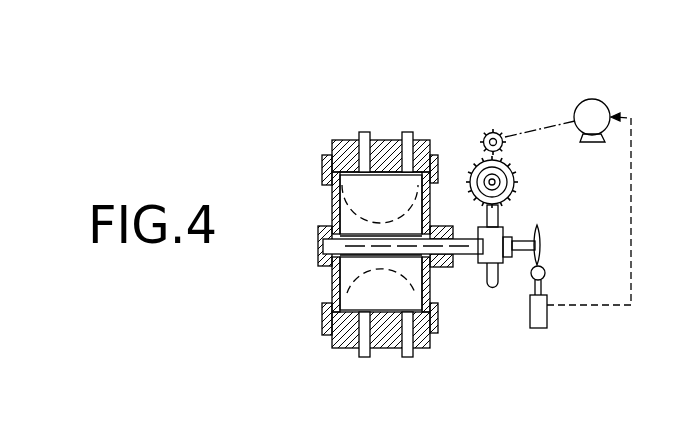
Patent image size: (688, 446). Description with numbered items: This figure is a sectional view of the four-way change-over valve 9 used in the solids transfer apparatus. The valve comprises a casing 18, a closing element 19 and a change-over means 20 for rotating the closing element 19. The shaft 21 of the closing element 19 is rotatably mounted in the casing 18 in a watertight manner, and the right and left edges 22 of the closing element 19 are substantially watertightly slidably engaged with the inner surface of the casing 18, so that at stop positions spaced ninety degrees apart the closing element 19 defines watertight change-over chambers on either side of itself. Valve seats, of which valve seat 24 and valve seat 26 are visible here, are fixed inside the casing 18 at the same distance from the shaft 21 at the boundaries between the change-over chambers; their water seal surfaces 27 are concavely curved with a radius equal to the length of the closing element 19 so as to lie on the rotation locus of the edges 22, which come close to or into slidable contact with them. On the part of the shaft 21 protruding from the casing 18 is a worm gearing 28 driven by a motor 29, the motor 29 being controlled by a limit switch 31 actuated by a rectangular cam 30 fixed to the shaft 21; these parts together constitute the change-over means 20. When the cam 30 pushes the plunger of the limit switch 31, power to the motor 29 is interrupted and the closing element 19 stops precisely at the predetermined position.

The four-way change-over valve 9 is at (380, 140).
The casing 18 is at (329, 203).
The closing element 19 is at (347, 274).
The change-over means 20 is at (493, 113).
The shaft 21 is at (338, 240).
The edges 22 is at (348, 349).
The valve seat 24 is at (431, 340).
The valve seat 26 is at (412, 152).
The water seal surface 27 is at (363, 178).
The worm gearing 28 is at (519, 187).
The motor 29 is at (597, 104).
The cam 30 is at (541, 263).
The limit switch 31 is at (538, 328).